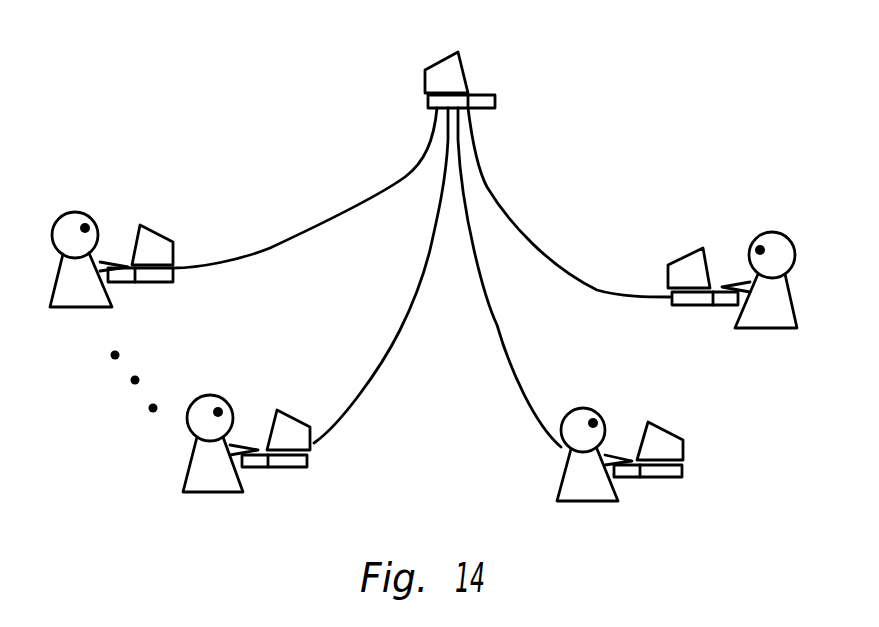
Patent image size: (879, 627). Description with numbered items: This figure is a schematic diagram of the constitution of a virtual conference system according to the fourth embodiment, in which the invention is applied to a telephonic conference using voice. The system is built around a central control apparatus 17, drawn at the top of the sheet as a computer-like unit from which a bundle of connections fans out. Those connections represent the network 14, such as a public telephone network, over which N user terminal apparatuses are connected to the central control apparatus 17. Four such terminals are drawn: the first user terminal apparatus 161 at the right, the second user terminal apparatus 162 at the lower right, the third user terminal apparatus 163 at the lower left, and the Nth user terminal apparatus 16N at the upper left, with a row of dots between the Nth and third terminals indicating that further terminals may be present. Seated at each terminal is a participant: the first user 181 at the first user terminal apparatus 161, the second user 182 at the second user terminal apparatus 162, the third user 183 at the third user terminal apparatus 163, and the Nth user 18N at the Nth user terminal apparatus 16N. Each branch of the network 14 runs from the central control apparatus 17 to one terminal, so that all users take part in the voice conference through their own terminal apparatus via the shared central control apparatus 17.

The central control apparatus 17 is at (459, 57).
The network 14 is at (389, 187).
The user 18N is at (85, 212).
The user terminal apparatus 16N is at (148, 235).
The user 181 is at (768, 232).
The user terminal apparatus 161 is at (682, 260).
The user 183 is at (223, 358).
The user terminal apparatus 163 is at (283, 420).
The user 182 is at (578, 497).
The user terminal apparatus 162 is at (672, 473).